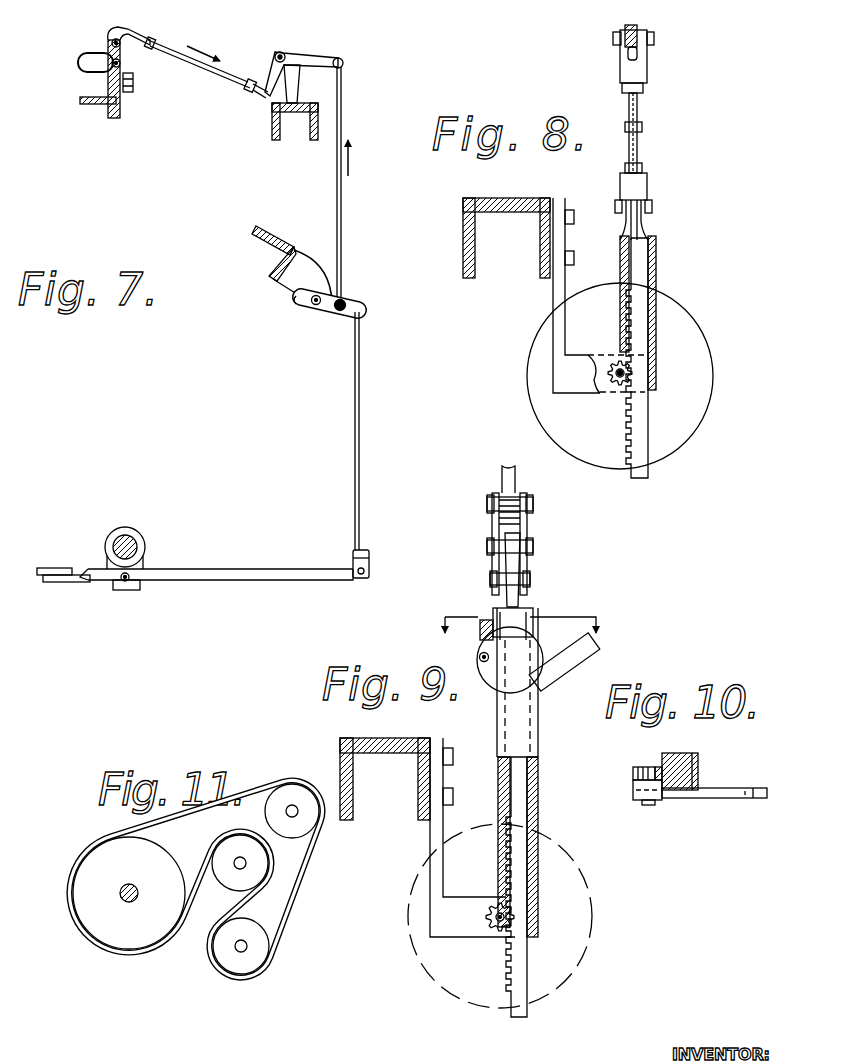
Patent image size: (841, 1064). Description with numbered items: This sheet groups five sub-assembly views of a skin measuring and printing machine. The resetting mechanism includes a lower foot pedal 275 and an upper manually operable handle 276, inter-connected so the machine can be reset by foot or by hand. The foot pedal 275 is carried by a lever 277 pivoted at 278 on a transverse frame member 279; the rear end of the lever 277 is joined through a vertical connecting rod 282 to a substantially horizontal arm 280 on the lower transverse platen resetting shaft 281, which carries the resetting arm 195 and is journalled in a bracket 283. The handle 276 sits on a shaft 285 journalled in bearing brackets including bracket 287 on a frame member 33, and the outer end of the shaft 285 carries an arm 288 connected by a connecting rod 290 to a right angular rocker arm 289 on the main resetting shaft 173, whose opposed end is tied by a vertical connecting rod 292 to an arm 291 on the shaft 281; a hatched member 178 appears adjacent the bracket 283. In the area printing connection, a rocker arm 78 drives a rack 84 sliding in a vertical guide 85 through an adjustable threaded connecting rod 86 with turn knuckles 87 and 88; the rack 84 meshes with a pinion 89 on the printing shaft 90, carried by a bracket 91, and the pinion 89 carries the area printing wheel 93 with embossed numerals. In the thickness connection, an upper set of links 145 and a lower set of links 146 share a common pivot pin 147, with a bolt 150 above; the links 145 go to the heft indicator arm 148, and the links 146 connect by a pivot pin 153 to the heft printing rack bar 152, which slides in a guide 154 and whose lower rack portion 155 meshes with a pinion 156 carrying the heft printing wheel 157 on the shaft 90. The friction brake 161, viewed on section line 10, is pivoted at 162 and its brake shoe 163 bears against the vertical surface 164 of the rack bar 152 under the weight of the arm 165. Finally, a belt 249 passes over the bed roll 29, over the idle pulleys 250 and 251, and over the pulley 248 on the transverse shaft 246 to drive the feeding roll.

In FIG. 7, the frame bracket 33 is at (92, 105).
In FIG. 7, the shaft 285 is at (108, 78).
In FIG. 7, the handle 276 is at (85, 62).
In FIG. 7, the bearing bracket 287 is at (126, 76).
In FIG. 7, the arm 288 is at (157, 45).
In FIG. 7, the connecting rod 290 is at (218, 73).
In FIG. 7, the right angular rocker arm 289 is at (270, 70).
In FIG. 7, the main resetting shaft 173 is at (281, 55).
In FIG. 7, the vertical connecting rod 292 is at (338, 178).
In FIG. 7, the hatched arm 178 is at (257, 233).
In FIG. 7, the bracket 283 is at (298, 262).
In FIG. 7, the lower transverse platen resetting shaft 281 is at (310, 306).
In FIG. 7, the resetting arm 195 is at (296, 298).
In FIG. 7, the arm 291 is at (321, 313).
In FIG. 7, the horizontal arm 280 is at (375, 296).
In FIG. 7, the vertical connecting rod 282 is at (355, 381).
In FIG. 7, the lever 277 is at (228, 560).
In FIG. 7, the foot pedal 275 is at (60, 560).
In FIG. 7, the transverse frame member 279 is at (153, 522).
In FIG. 7, the pivot 278 is at (127, 582).
In FIG. 8, the rocker arm 78 is at (633, 27).
In FIG. 8, the turn knuckle 87 is at (640, 68).
In FIG. 8, the adjustable threaded connecting rod 86 is at (640, 144).
In FIG. 8, the turn knuckle 88 is at (648, 186).
In FIG. 8, the vertical guide 85 is at (654, 258).
In FIG. 8, the rack 84 is at (640, 298).
In FIG. 8, the area printing wheel 93 is at (680, 320).
In FIG. 8, the bracket 91 is at (582, 385).
In FIG. 8, the pinion 89 is at (618, 360).
In FIG. 8, the printing shaft 90 is at (616, 392).
In FIG. 9, the printing shaft 90 is at (492, 922).
In FIG. 9, the heft indicator arm 148 is at (502, 470).
In FIG. 9, the upper set of links 145 is at (490, 520).
In FIG. 9, the upper bolt 150 is at (487, 503).
In FIG. 9, the common pivot pin 147 is at (490, 545).
In FIG. 9, the lower set of links 146 is at (493, 562).
In FIG. 9, the pivot pin 153 is at (493, 580).
In FIG. 9, the section line 10 is at (522, 622).
In FIG. 9, the brake shoe 163 is at (512, 627).
In FIG. 10, the brake shoe 163 is at (634, 771).
In FIG. 9, the guide 154 is at (508, 722).
In FIG. 10, the guide 154 is at (693, 750).
In FIG. 9, the pivot 162 is at (479, 657).
In FIG. 10, the pivot 162 is at (645, 805).
In FIG. 9, the friction brake 161 is at (497, 690).
In FIG. 10, the friction brake 161 is at (668, 801).
In FIG. 9, the arm 165 is at (600, 643).
In FIG. 10, the arm 165 is at (760, 799).
In FIG. 9, the heft printing rack bar 152 is at (515, 780).
In FIG. 10, the heft printing rack bar 152 is at (698, 770).
In FIG. 9, the lower rack portion 155 is at (575, 960).
In FIG. 9, the pinion 156 is at (495, 935).
In FIG. 9, the heft printing wheel 157 is at (430, 984).
In FIG. 10, the vertical surface 164 is at (660, 764).
In FIG. 11, the bed roll 29 is at (129, 893).
In FIG. 11, the idle pulley 250 is at (292, 790).
In FIG. 11, the pulley 248 is at (243, 828).
In FIG. 11, the idle pulley 251 is at (258, 942).
In FIG. 11, the transverse shaft 246 is at (247, 865).
In FIG. 11, the belt 249 is at (297, 906).